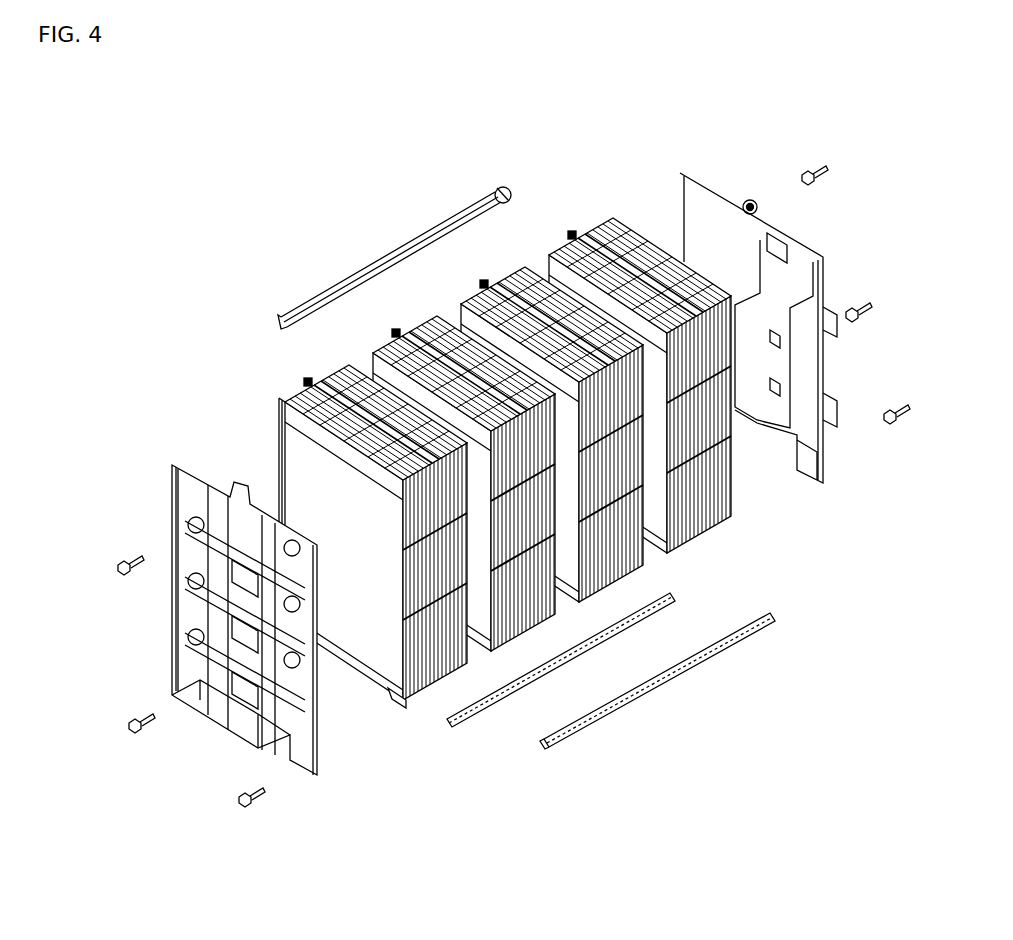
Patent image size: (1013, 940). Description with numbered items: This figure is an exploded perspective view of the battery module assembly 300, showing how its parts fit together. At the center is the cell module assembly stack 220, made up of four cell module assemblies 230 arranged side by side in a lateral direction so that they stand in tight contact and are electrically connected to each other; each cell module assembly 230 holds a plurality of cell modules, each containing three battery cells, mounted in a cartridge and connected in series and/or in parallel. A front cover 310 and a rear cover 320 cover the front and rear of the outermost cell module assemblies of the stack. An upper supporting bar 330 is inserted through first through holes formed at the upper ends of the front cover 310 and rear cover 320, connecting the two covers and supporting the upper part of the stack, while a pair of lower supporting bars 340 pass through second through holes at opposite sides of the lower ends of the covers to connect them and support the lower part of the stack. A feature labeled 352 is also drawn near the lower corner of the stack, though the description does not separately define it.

The battery module assembly 300 is at (473, 479).
The cell module assembly stack 220 is at (690, 362).
The cell module assembly 230 is at (275, 432).
The front cover 310 is at (225, 648).
The rear cover 320 is at (748, 200).
The upper supporting bar 330 is at (408, 222).
The lower supporting bars 340 is at (563, 737).
The fixing bracket 352 is at (402, 714).